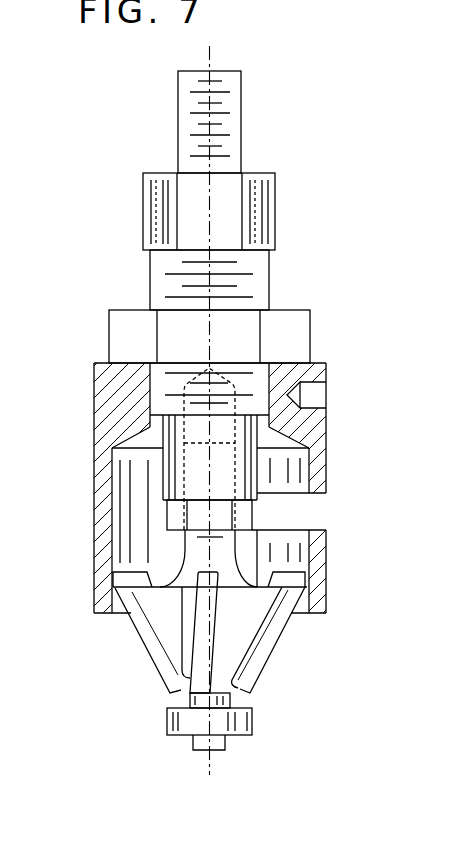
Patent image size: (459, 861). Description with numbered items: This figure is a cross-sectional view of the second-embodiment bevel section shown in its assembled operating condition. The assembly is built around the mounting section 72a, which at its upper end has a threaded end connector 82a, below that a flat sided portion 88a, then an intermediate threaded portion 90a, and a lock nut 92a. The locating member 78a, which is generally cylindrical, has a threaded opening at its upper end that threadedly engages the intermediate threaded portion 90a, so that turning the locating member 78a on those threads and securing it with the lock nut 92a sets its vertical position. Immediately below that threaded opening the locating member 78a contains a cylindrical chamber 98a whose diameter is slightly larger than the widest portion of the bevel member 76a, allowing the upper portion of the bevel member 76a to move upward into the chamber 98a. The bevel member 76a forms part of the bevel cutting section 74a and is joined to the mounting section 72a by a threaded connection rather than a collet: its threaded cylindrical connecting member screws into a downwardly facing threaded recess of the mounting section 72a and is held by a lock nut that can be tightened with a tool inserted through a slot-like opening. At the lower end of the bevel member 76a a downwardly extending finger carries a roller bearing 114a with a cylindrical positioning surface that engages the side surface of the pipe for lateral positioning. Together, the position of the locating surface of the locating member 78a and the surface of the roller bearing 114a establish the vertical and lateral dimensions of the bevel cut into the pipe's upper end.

The mounting section 72a is at (308, 265).
The bevel cutting section 74a is at (303, 645).
The bevel member 76a is at (268, 668).
The locating member 78a is at (90, 560).
The threaded end connector 82a is at (188, 124).
The flat sided portion 88a is at (153, 213).
The intermediate threaded portion 90a is at (160, 285).
The lock nut 92a is at (120, 333).
The cylindrical chamber 98a is at (112, 512).
The roller bearing 114a is at (168, 722).